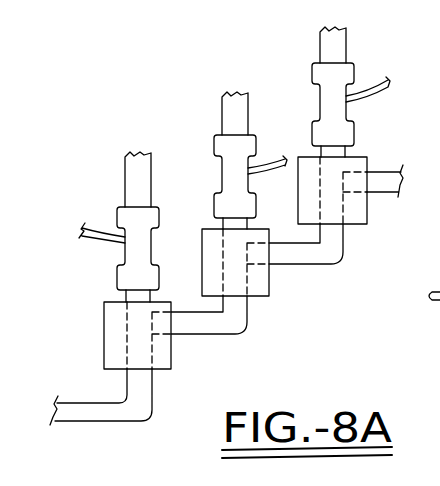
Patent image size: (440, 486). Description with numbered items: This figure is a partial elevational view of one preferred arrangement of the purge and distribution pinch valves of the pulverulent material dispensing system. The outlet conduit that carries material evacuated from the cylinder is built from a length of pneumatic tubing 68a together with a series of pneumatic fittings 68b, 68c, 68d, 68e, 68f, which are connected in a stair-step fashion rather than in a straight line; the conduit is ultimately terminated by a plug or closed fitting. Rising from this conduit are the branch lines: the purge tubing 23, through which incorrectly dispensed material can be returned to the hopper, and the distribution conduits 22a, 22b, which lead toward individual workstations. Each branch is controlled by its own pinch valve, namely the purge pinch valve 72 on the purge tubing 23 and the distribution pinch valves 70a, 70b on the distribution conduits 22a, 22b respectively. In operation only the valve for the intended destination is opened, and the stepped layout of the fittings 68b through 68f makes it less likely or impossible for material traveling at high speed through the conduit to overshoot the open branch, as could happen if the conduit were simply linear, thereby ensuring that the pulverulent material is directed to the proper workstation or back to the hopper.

The distribution conduit 22a is at (225, 113).
The distribution conduit 22b is at (321, 43).
The purge tubing 23 is at (123, 172).
The distribution pinch valve 70a is at (222, 172).
The distribution pinch valve 70b is at (321, 100).
The purge pinch valve 72 is at (131, 253).
The pneumatic tubing 68a is at (140, 418).
The pneumatic fitting 68b is at (171, 356).
The pneumatic fitting 68c is at (243, 317).
The pneumatic fitting 68d is at (270, 287).
The pneumatic fitting 68e is at (345, 238).
The pneumatic fitting 68f is at (368, 165).